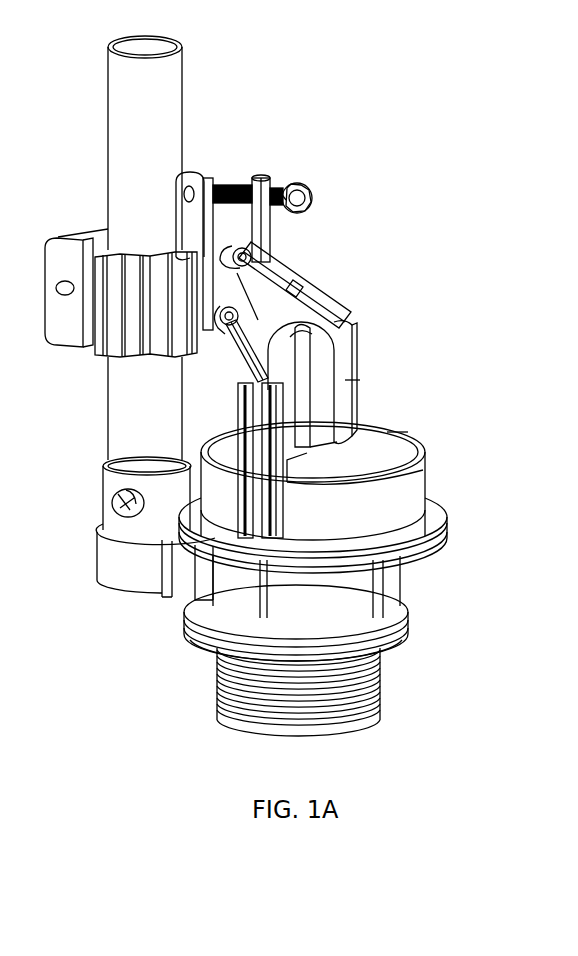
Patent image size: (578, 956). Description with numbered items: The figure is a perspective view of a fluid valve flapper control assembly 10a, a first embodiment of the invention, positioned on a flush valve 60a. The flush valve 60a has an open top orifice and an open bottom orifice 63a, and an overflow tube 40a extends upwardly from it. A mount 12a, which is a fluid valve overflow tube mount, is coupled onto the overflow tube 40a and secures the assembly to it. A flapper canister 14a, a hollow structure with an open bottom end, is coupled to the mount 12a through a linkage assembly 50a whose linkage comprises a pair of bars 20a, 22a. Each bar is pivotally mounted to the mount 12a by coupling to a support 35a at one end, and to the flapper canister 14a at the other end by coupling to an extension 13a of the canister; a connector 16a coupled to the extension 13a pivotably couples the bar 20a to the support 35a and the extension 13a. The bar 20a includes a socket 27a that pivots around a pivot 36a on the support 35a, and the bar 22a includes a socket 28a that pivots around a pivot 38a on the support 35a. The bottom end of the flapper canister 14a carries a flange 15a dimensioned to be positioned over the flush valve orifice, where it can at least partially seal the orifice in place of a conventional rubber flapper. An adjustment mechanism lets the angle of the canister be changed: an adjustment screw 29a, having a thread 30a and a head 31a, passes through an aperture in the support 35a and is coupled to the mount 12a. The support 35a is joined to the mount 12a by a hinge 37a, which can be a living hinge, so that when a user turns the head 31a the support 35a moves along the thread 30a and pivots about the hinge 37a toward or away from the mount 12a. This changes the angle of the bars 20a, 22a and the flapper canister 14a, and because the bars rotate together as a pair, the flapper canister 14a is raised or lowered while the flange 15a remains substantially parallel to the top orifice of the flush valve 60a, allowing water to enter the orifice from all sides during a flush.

The fluid valve flapper control assembly 10a is at (303, 120).
The mount 12a is at (196, 185).
The extension 13a is at (352, 380).
The flapper canister 14a is at (390, 433).
The flange 15a is at (432, 508).
The connector 16a is at (334, 330).
The bar 20a is at (333, 290).
The bar 22a is at (234, 354).
The socket 27a is at (238, 258).
The socket 28a is at (222, 312).
The adjustment screw 29a is at (284, 188).
The thread 30a is at (240, 186).
The head 31a is at (303, 192).
The support 35a is at (262, 180).
The pivot 36a is at (250, 264).
The hinge 37a is at (195, 345).
The pivot 38a is at (236, 318).
The overflow tube 40a is at (120, 130).
The linkage assembly 50a is at (353, 215).
The flush valve 60a is at (400, 605).
The bottom orifice 63a is at (332, 748).